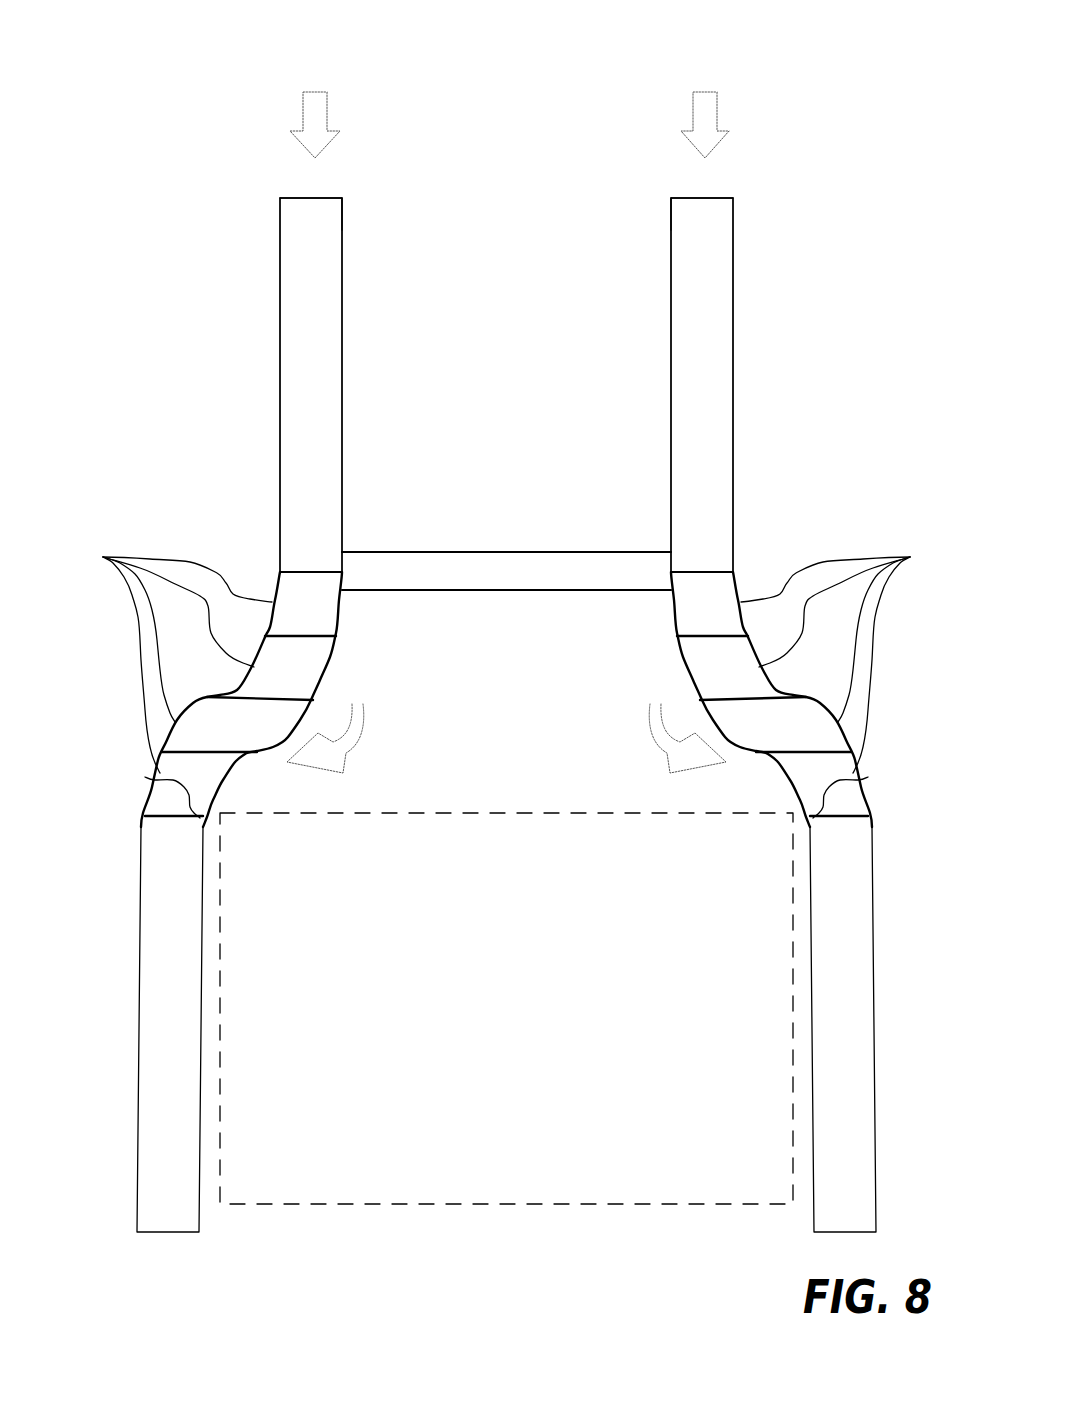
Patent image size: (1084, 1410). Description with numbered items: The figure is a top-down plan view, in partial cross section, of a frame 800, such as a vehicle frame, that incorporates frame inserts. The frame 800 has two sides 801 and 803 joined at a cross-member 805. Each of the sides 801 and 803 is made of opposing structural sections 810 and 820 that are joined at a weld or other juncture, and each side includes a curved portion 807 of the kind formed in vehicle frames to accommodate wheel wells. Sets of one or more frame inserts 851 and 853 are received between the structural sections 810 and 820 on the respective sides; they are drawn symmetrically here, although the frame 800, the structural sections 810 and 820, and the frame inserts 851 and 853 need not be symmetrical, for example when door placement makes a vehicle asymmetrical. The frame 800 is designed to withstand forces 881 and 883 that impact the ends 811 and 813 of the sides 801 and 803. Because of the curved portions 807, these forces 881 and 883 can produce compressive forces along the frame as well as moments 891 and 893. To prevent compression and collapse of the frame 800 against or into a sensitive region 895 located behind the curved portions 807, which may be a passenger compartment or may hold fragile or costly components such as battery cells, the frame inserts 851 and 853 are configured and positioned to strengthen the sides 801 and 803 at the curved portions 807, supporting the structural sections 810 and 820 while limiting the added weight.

The frame 800 is at (501, 641).
The side 801 is at (342, 305).
The side 803 is at (671, 305).
The cross-member 805 is at (453, 552).
The curved portion 807 is at (178, 523).
The structural section 810 is at (280, 475).
The end 811 is at (345, 196).
The end 813 is at (669, 196).
The structural section 820 is at (342, 482).
The frame inserts 851 is at (103, 557).
The frame inserts 853 is at (908, 558).
The force 881 is at (300, 120).
The force 883 is at (715, 120).
The moment 891 is at (353, 737).
The moment 893 is at (660, 737).
The sensitive region 895 is at (515, 1176).